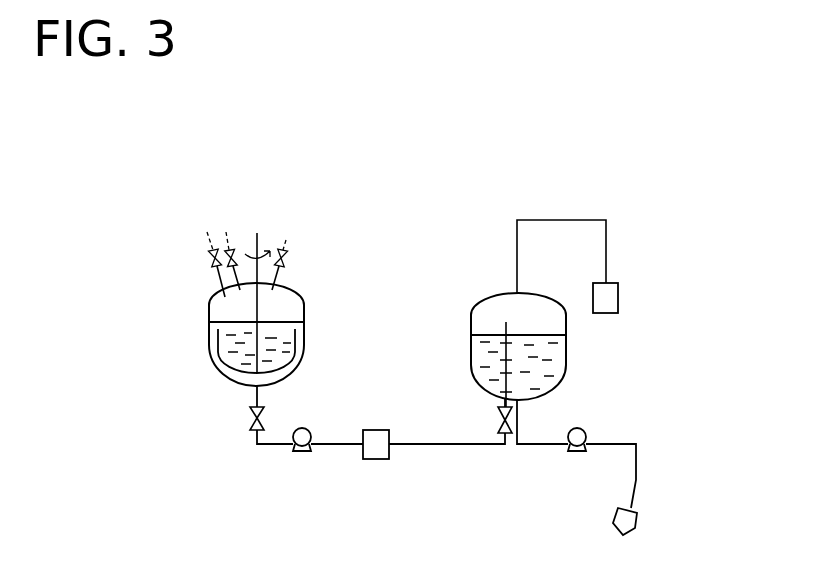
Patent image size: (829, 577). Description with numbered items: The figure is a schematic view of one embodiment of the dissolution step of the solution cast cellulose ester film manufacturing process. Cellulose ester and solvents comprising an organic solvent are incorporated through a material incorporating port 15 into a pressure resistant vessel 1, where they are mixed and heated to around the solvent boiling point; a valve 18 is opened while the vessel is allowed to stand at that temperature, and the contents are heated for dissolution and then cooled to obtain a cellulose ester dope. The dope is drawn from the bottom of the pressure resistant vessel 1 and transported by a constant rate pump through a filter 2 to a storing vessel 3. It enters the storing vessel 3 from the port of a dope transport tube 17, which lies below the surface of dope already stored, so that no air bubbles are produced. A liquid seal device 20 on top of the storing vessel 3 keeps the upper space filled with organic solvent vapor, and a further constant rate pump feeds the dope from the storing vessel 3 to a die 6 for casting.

The pressure resistant vessel 1 is at (307, 305).
The filter 2 is at (374, 430).
The storing vessel 3 is at (479, 303).
The die 6 is at (637, 516).
The material incorporating port 15 is at (226, 232).
The dope transport tube 17 is at (503, 378).
The valve 18 is at (286, 244).
The liquid seal device 20 is at (626, 301).